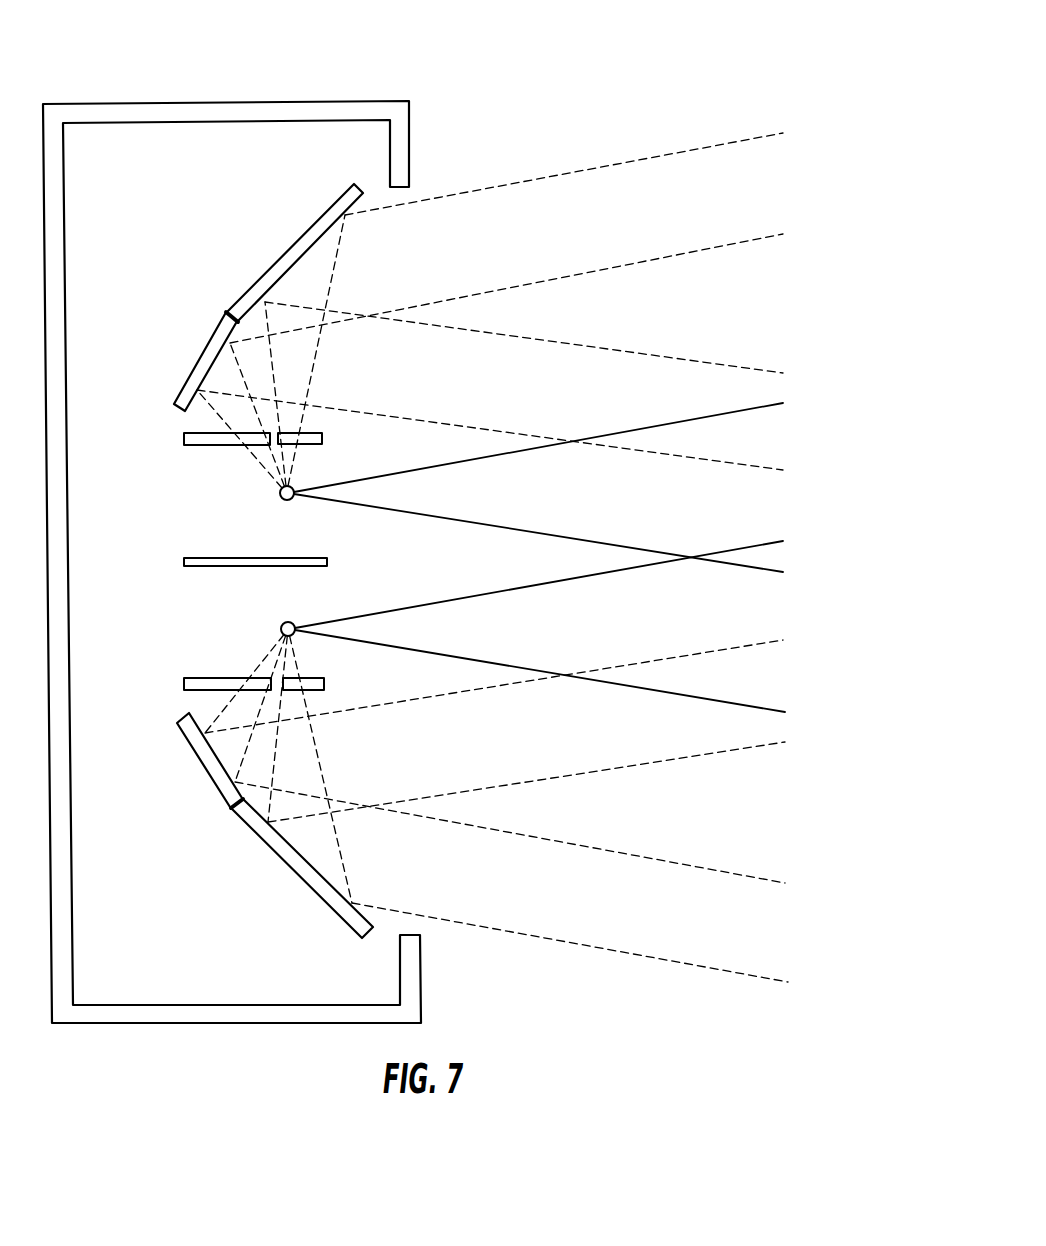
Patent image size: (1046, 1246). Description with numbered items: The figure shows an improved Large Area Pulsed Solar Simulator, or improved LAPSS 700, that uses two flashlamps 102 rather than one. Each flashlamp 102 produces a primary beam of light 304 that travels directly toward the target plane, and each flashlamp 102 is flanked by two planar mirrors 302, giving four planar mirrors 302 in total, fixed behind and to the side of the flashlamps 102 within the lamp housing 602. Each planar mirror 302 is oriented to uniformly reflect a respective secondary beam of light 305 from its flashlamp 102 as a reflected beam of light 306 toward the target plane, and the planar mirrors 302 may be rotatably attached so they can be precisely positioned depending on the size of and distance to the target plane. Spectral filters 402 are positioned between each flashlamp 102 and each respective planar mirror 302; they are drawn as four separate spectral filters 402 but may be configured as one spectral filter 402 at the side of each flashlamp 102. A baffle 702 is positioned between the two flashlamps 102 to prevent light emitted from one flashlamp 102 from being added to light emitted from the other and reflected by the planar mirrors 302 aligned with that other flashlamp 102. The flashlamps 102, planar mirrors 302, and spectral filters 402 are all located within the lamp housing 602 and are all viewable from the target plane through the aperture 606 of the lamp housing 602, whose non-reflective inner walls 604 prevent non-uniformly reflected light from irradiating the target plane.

The improved LAPSS 700 is at (590, 63).
The lamp housing 602 is at (232, 542).
The non-reflective inner walls 604 is at (348, 975).
The aperture 606 is at (412, 232).
The planar mirror 302 is at (283, 255).
The secondary beam of light 305 is at (332, 270).
The reflected beam of light 306 is at (492, 559).
The primary beam of light 304 is at (539, 560).
The flashlamp 102 is at (280, 498).
The spectral filter 402 is at (283, 678).
The baffle 702 is at (183, 560).